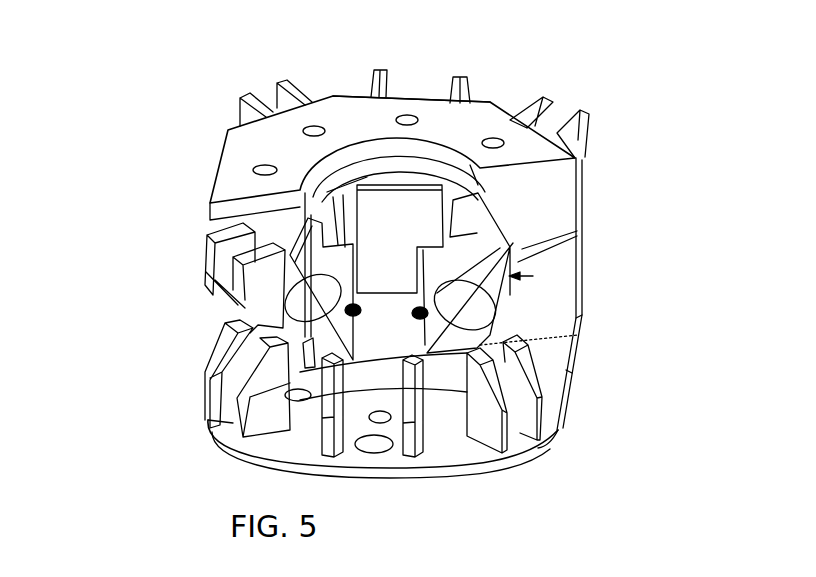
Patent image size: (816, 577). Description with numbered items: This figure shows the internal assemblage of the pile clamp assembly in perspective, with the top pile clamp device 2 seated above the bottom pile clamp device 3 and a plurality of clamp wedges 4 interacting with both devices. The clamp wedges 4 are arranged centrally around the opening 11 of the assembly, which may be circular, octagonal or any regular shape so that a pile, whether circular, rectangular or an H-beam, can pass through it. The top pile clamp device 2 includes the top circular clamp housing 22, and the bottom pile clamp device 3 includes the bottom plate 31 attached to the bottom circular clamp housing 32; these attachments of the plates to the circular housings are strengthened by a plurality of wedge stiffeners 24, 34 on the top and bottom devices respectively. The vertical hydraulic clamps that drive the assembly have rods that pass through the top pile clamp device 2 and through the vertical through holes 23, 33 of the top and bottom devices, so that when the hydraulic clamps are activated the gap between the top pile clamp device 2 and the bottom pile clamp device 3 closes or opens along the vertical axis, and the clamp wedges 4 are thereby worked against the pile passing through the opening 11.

The top pile clamp device 2 is at (163, 147).
The bottom pile clamp device 3 is at (178, 367).
The clamp wedge 4 is at (578, 232).
The opening 11 is at (417, 138).
The top circular clamp housing 22 is at (487, 96).
The vertical through hole 23 is at (417, 100).
The wedge stiffener 24 is at (555, 81).
The bottom plate 31 is at (567, 370).
The bottom circular clamp housing 32 is at (556, 311).
The vertical through hole 33 is at (384, 432).
The wedge stiffener 34 is at (559, 425).